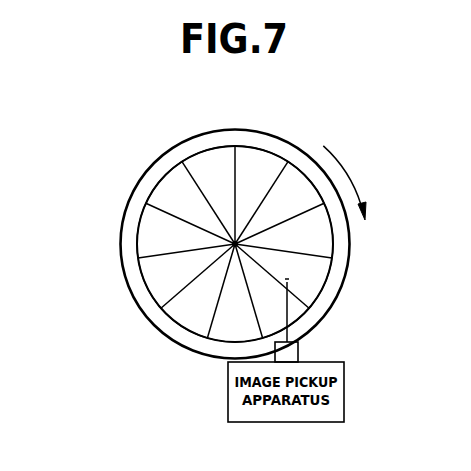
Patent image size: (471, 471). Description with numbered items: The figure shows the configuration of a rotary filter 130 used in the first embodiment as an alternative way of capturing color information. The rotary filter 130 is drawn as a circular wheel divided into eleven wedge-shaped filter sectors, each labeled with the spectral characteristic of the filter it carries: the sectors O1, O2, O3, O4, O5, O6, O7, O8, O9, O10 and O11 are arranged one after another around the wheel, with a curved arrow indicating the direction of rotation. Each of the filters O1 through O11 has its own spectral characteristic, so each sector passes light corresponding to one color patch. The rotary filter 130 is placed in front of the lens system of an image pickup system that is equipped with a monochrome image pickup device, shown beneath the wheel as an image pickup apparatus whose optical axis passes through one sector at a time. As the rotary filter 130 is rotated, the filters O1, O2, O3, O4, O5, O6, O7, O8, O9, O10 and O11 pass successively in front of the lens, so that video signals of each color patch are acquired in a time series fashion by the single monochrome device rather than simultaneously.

The rotary filter 130 is at (251, 129).
The filter spectral characteristic O1 is at (263, 158).
The filter spectral characteristic O2 is at (292, 182).
The filter spectral characteristic O3 is at (320, 238).
The filter spectral characteristic O4 is at (315, 283).
The filter spectral characteristic O5 is at (295, 312).
The filter spectral characteristic O6 is at (235, 330).
The filter spectral characteristic O7 is at (185, 320).
The filter spectral characteristic O8 is at (150, 283).
The filter spectral characteristic O9 is at (150, 237).
The filter spectral characteristic O10 is at (163, 188).
The filter spectral characteristic O11 is at (213, 158).